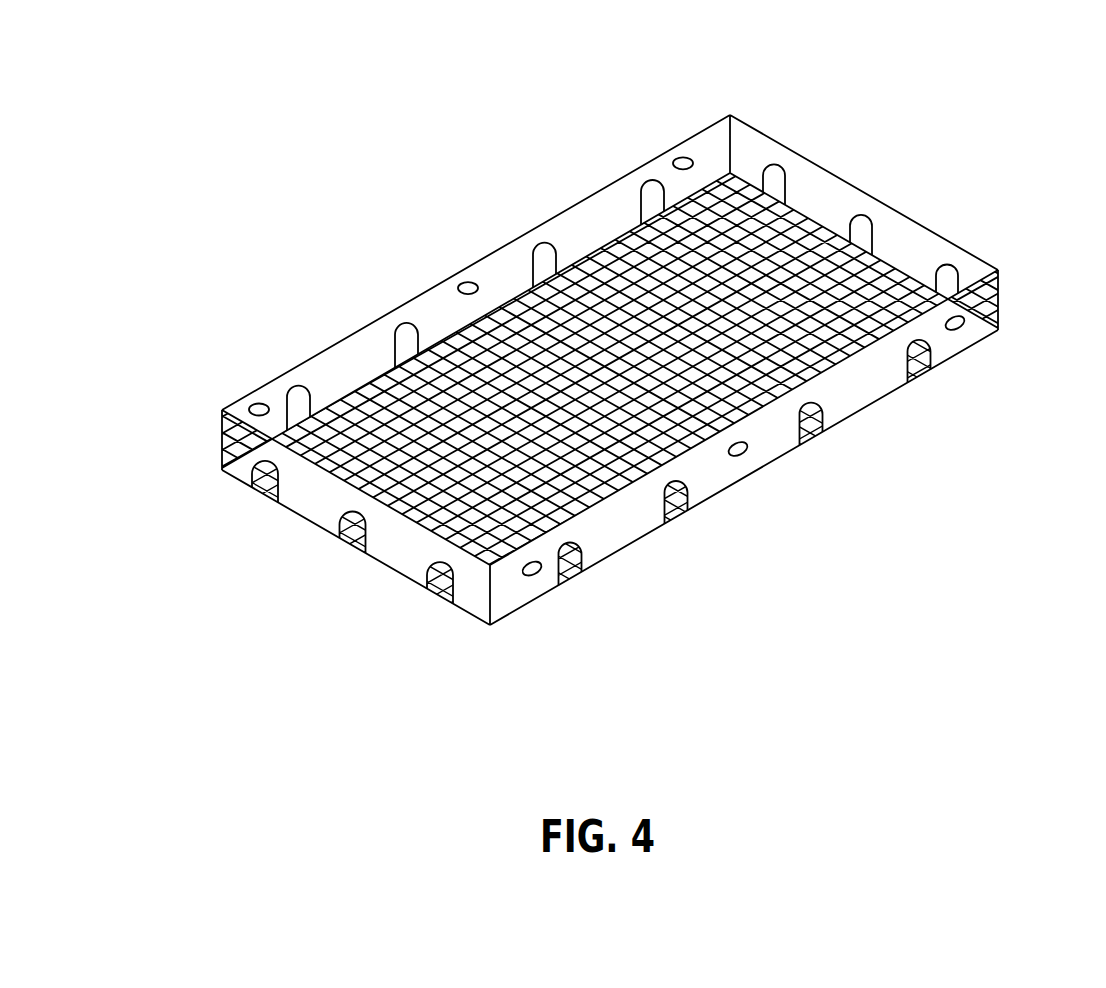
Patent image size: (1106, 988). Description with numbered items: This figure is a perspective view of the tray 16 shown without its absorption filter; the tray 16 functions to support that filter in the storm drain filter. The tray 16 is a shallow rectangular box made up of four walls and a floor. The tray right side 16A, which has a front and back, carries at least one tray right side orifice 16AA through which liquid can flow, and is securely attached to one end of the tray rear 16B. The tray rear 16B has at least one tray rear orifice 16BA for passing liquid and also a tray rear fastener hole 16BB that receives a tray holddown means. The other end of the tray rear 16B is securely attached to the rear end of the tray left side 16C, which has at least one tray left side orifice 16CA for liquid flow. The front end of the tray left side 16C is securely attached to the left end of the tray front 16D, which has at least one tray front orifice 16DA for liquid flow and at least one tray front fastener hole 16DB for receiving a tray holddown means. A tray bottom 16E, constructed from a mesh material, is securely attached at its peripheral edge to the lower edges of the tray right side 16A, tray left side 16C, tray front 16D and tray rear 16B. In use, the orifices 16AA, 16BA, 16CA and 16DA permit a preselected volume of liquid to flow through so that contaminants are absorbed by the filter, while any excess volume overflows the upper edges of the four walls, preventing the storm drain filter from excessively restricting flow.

The tray 16 is at (611, 369).
The tray right side 16A is at (913, 222).
The tray right side orifice 16AA is at (862, 218).
The tray rear 16B is at (476, 275).
The tray rear orifice 16BA is at (547, 255).
The tray rear fastener hole 16BB is at (676, 160).
The tray left side 16C is at (611, 408).
The tray left side orifice 16CA is at (257, 483).
The tray front 16D is at (611, 372).
The tray front orifice 16DA is at (573, 573).
The tray front fastener hole 16DB is at (745, 457).
The tray bottom 16E is at (852, 308).